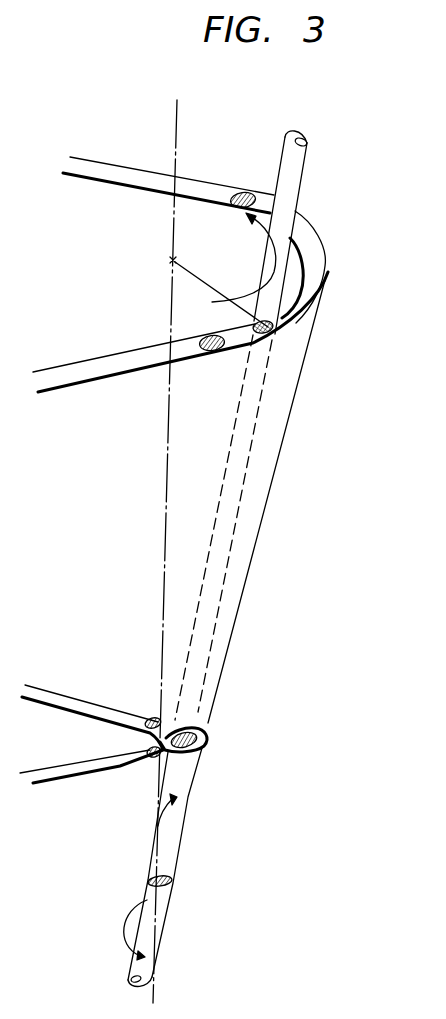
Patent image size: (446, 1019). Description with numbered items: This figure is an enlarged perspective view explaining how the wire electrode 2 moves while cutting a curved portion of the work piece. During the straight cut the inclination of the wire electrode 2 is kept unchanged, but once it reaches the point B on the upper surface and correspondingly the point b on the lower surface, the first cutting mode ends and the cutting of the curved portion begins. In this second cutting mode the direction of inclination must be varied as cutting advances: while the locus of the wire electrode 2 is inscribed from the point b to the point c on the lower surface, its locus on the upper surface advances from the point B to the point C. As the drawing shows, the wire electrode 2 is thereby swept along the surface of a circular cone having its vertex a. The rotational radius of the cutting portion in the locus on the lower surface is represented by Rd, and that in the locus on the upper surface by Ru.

The wire electrode 2 is at (292, 163).
The point C is at (249, 192).
The point B is at (214, 352).
The vertex a is at (172, 877).
The point b is at (152, 758).
The point c is at (155, 717).
The rotational radius Ru is at (223, 270).
The rotational radius Rd is at (170, 737).